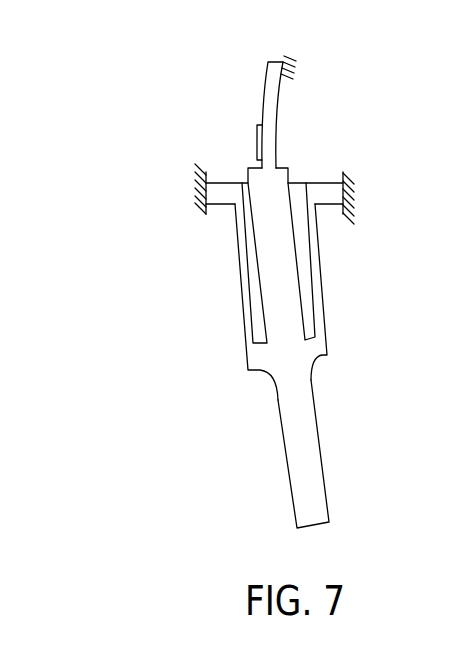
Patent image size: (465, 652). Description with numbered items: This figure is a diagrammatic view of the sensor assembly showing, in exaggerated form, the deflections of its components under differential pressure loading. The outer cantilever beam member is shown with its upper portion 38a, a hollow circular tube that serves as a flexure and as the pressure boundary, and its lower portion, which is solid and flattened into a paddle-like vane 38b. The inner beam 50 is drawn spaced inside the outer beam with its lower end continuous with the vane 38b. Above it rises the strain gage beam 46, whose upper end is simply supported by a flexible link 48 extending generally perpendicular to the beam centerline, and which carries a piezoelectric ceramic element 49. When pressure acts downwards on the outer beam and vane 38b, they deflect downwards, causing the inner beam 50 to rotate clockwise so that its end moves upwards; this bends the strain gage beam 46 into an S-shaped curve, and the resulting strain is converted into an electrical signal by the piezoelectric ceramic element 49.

The strain gage beam 46 is at (268, 135).
The flexible link 48 is at (290, 62).
The piezoelectric ceramic element 49 is at (257, 138).
The inner beam 50 is at (267, 297).
The upper portion of outer cantilever beam member 38a is at (320, 293).
The vane 38b is at (317, 478).